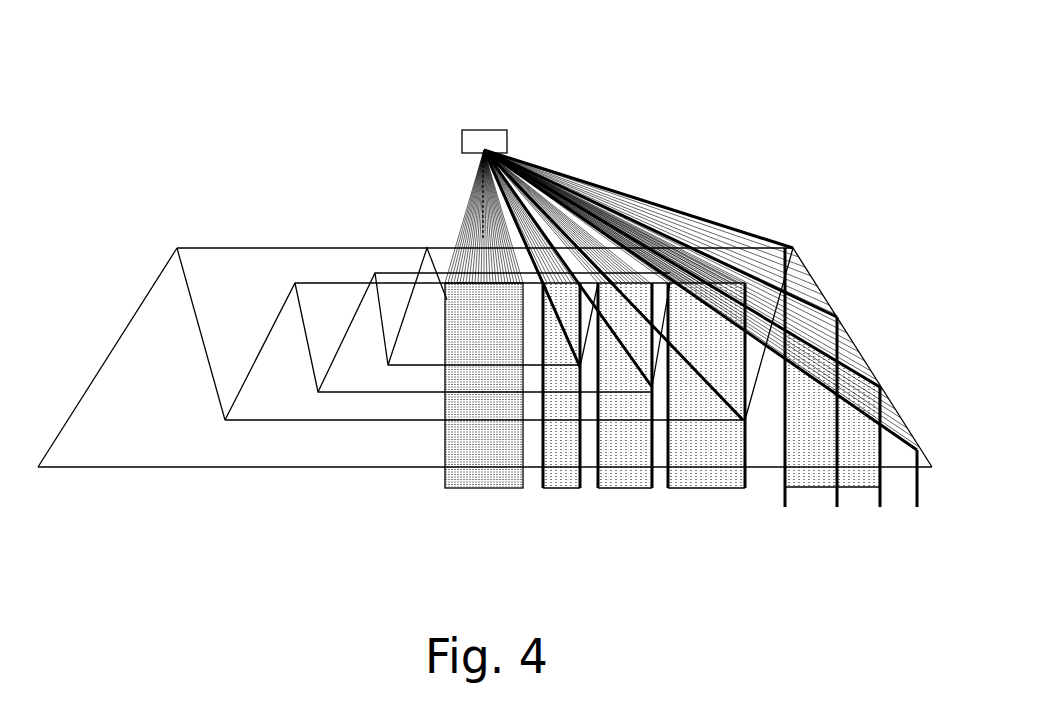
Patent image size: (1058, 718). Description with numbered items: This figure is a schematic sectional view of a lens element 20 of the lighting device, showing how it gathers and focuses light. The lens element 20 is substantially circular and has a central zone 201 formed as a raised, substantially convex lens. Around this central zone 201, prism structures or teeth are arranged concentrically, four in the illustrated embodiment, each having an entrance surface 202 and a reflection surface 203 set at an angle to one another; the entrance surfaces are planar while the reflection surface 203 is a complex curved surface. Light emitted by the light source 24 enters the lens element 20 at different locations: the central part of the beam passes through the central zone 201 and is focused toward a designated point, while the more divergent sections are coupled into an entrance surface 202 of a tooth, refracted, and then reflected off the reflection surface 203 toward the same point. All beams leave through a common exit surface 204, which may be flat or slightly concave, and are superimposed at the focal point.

The lens element 20 is at (245, 223).
The light source 24 is at (483, 133).
The central zone 201 is at (470, 300).
The entrance surface 202 is at (190, 300).
The reflection surface 203 is at (120, 331).
The exit surface 204 is at (225, 468).